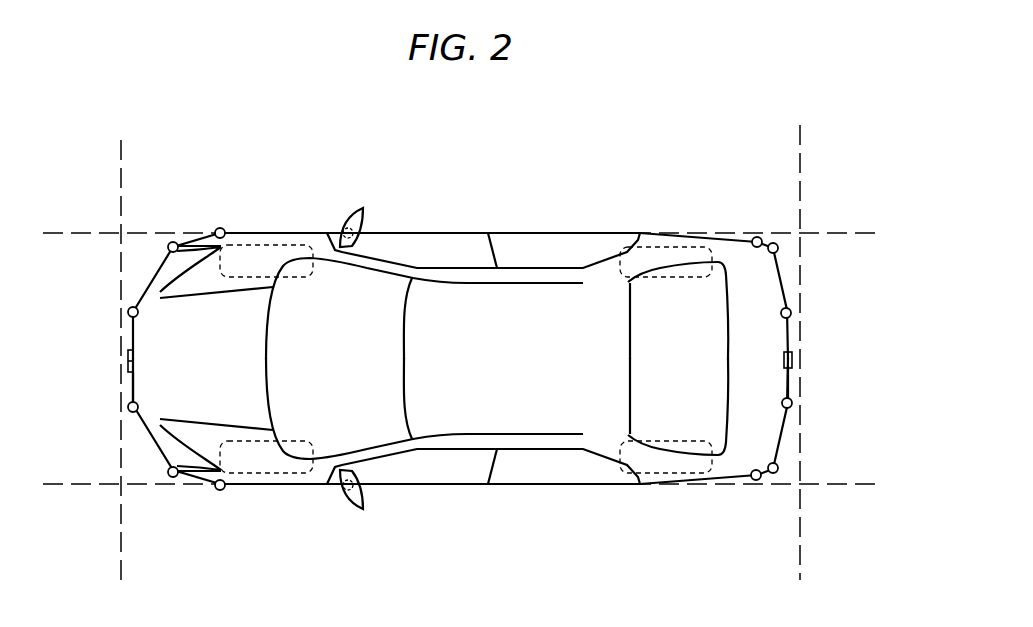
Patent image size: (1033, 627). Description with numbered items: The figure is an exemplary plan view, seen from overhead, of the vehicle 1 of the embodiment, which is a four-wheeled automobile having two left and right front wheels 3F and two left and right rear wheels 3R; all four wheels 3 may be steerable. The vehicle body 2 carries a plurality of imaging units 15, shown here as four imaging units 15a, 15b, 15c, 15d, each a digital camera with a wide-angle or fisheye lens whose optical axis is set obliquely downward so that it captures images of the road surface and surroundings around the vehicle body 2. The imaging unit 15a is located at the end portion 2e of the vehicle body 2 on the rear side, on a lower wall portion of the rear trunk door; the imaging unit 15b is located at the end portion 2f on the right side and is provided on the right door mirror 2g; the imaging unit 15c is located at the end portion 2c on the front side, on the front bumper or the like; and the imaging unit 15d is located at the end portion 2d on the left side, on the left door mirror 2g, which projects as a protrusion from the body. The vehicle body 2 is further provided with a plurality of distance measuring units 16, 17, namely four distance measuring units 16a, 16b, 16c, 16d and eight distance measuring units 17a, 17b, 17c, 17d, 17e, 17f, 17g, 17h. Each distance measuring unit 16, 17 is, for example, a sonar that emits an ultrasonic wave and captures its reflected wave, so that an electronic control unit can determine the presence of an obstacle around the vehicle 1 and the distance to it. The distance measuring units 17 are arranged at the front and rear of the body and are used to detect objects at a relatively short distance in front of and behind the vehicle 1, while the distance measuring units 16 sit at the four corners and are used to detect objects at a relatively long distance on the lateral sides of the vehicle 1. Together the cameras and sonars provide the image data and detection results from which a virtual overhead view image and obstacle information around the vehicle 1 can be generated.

The vehicle 1 is at (573, 152).
The vehicle body 2 is at (733, 238).
The end portion of the vehicle body on a front side 2c is at (130, 375).
The end portion of the vehicle body on a left side 2d is at (550, 486).
The end portion of the vehicle body on a rear side 2e is at (790, 378).
The end portion of the vehicle body on a right side 2f is at (572, 233).
The door mirror 2g is at (365, 210).
The wheels 3 is at (466, 361).
The front wheels 3F is at (265, 245).
The rear wheels 3R is at (665, 247).
The imaging units 15 is at (469, 376).
The imaging unit 15a is at (793, 356).
The imaging unit 15b is at (349, 227).
The imaging unit 15c is at (128, 353).
The imaging unit 15d is at (347, 492).
The distance measuring units 16 is at (468, 347).
The distance measuring unit 16a is at (755, 480).
The distance measuring unit 16b is at (758, 237).
The distance measuring unit 16c is at (218, 229).
The distance measuring unit 16d is at (218, 490).
The distance measuring units 17 is at (467, 329).
The distance measuring unit 17a is at (778, 468).
The distance measuring unit 17b is at (791, 404).
The distance measuring unit 17c is at (790, 313).
The distance measuring unit 17d is at (777, 246).
The distance measuring unit 17e is at (167, 247).
The distance measuring unit 17f is at (129, 311).
The distance measuring unit 17g is at (129, 406).
The distance measuring unit 17h is at (169, 472).